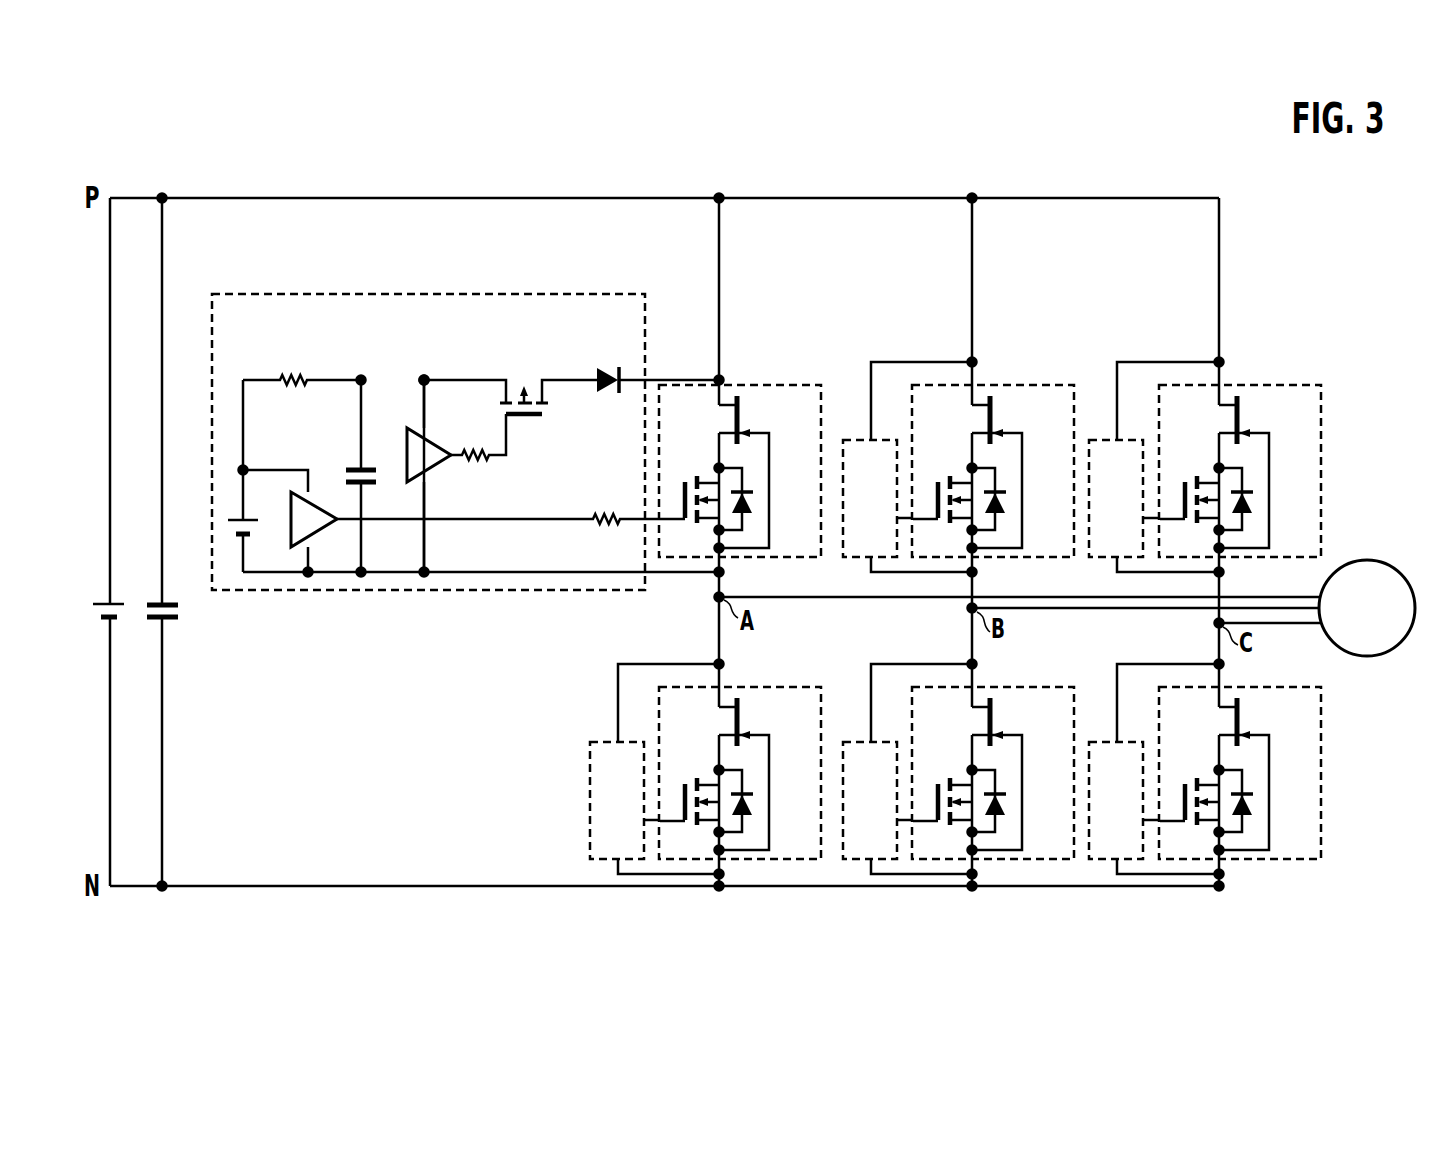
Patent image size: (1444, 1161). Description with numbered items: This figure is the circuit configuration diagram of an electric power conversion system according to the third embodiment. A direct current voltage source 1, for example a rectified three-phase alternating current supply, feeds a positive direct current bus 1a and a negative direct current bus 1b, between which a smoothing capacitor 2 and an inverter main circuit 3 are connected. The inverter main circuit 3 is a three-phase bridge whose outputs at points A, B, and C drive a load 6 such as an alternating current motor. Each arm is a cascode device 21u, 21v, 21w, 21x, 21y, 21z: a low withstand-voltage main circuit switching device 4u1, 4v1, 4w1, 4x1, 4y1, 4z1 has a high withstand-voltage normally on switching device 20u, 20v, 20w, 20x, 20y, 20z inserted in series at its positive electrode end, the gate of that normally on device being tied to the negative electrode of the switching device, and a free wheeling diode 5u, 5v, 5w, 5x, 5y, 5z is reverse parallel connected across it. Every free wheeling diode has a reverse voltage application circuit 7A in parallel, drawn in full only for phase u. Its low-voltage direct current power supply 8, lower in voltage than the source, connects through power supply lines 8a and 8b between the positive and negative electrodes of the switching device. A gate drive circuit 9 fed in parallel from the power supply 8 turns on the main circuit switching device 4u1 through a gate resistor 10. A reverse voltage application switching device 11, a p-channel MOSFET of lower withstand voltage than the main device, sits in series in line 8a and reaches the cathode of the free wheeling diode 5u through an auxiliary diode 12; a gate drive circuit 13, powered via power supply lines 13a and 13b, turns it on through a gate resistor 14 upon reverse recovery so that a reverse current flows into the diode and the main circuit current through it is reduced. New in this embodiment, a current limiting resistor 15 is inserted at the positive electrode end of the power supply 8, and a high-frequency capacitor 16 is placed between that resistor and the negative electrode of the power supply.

The direct current voltage source 1 is at (100, 600).
The positive direct current bus 1a is at (332, 197).
The negative direct current bus 1b is at (330, 888).
The smoothing capacitor 2 is at (152, 600).
The inverter main circuit 3 is at (960, 176).
The main circuit switching device 4u1 is at (692, 478).
The main circuit switching device 4v1 is at (942, 470).
The main circuit switching device 4w1 is at (1189, 470).
The main circuit switching device 4x1 is at (689, 772).
The main circuit switching device 4y1 is at (942, 772).
The main circuit switching device 4z1 is at (1189, 772).
The free wheeling diode 5u is at (750, 492).
The free wheeling diode 5v is at (1014, 488).
The free wheeling diode 5w is at (1263, 488).
The free wheeling diode 5x is at (761, 790).
The free wheeling diode 5y is at (1014, 790).
The free wheeling diode 5z is at (1261, 790).
The load 6 is at (1366, 560).
The reverse voltage application circuit 7A is at (487, 294).
The low-voltage direct current power supply 8 is at (228, 518).
The power supply line 8a is at (668, 378).
The power supply line 8b is at (682, 575).
The gate drive circuit 9 is at (297, 547).
The gate resistor 10 is at (603, 512).
The reverse voltage application switching device 11 is at (533, 378).
The auxiliary diode 12 is at (608, 372).
The gate drive circuit 13 is at (434, 471).
The power supply line 13a is at (426, 404).
The power supply line 13b is at (426, 540).
The gate resistor 14 is at (485, 458).
The current limiting resistor 15 is at (290, 377).
The high-frequency capacitor 16 is at (352, 467).
The normally on switching device 20u is at (745, 432).
The normally on switching device 20v is at (1015, 471).
The normally on switching device 20w is at (1264, 471).
The normally on switching device 20x is at (762, 773).
The normally on switching device 20y is at (1015, 773).
The normally on switching device 20z is at (1262, 773).
The cascode device 21u is at (775, 385).
The cascode device 21v is at (993, 439).
The cascode device 21w is at (1240, 439).
The cascode device 21x is at (740, 741).
The cascode device 21y is at (993, 741).
The cascode device 21z is at (1240, 741).